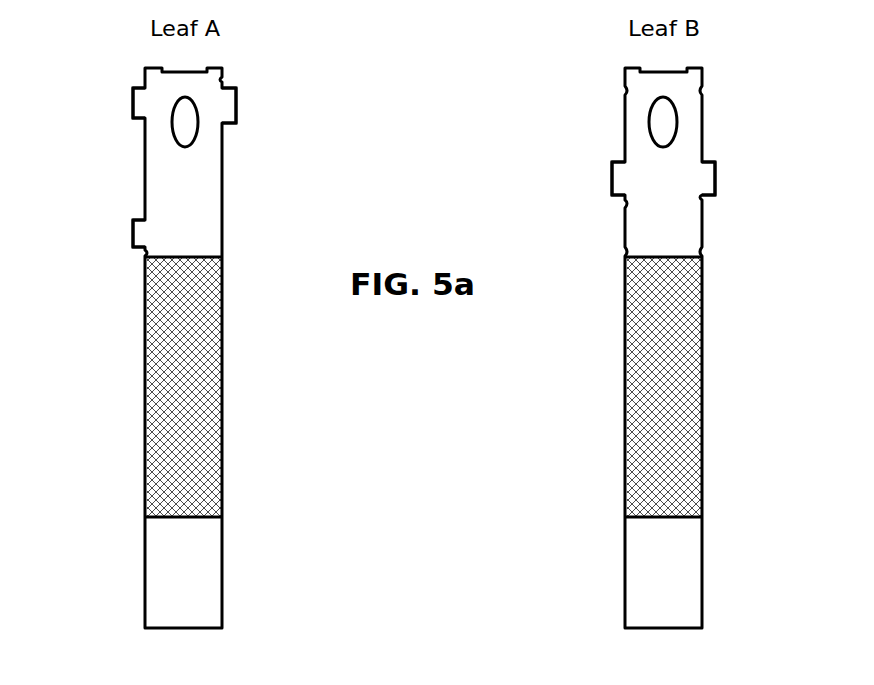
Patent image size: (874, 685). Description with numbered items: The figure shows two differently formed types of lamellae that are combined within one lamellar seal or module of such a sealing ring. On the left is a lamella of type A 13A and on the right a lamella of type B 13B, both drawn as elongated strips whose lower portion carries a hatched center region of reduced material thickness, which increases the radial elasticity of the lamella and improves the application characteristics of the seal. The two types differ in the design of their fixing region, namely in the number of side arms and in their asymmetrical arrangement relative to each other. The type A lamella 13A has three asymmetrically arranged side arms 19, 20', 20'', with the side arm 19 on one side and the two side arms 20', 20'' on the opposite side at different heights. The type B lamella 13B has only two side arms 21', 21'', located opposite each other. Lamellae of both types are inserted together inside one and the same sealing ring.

The lamella of type A 13A is at (183, 348).
The lamella of type B 13B is at (664, 348).
The side arm 19 is at (227, 105).
The side arm 20' is at (87, 103).
The side arm 20'' is at (86, 232).
The side arm 21' is at (761, 178).
The side arm 21'' is at (568, 178).